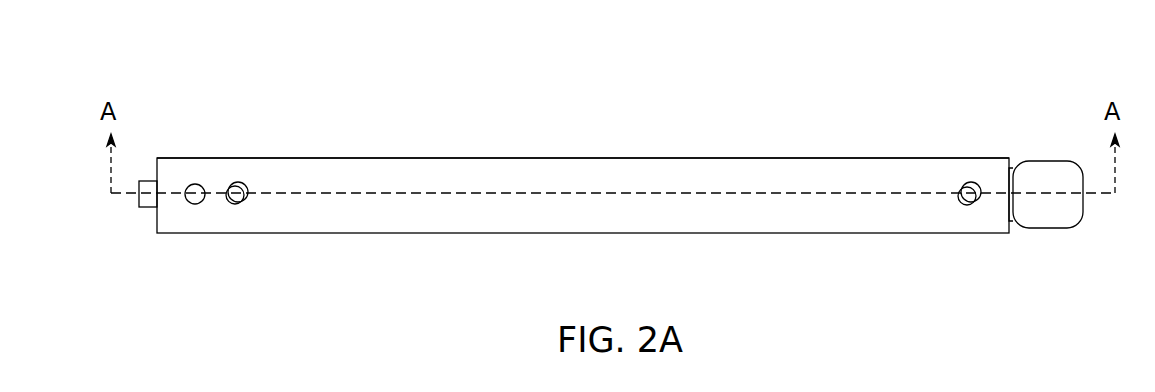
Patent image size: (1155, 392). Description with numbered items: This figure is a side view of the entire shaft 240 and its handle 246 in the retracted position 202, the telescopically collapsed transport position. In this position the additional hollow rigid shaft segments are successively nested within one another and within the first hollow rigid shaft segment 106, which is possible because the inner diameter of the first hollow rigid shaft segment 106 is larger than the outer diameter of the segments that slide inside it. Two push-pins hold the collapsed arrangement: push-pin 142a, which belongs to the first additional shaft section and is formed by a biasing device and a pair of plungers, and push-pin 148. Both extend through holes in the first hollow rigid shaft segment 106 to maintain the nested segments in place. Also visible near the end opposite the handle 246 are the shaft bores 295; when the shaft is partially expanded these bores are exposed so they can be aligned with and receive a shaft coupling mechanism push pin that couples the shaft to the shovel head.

The retracted position 202 is at (342, 137).
The entire shaft 240 is at (243, 137).
The first hollow rigid shaft segment 106 is at (579, 157).
The shaft bores 295 is at (195, 195).
The push-pin 142a is at (243, 195).
The push-pin 148 is at (970, 193).
The handle 246 is at (1050, 220).